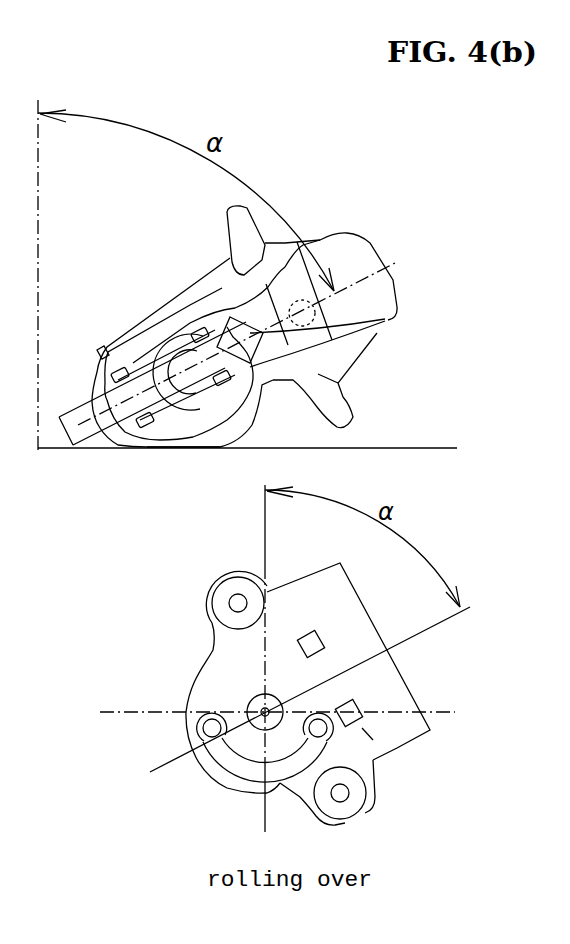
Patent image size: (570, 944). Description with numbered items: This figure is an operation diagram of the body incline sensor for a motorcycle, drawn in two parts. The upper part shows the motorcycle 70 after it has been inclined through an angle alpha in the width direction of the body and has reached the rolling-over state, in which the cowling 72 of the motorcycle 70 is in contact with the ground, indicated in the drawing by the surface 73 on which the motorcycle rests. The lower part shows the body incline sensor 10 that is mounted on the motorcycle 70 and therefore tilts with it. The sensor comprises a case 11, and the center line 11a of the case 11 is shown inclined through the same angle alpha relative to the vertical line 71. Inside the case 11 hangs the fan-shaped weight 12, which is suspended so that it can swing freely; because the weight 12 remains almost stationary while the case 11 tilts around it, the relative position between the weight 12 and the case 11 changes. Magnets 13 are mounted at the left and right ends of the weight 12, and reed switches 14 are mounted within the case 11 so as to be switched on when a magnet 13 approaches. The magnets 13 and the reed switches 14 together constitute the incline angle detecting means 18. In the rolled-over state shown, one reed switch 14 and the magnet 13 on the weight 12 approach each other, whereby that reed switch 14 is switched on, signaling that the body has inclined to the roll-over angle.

The body incline sensor 10 is at (385, 319).
The case 11 is at (360, 593).
The center line 11a is at (443, 620).
The fan-shaped weight 12 is at (223, 768).
The magnet 13 is at (373, 758).
The reed switch 14 is at (365, 728).
The incline angle detecting means 18 is at (405, 729).
The motorcycle 70 is at (171, 273).
The vertical line 71 is at (267, 538).
The cowling 72 is at (255, 435).
The ground surface 73 is at (433, 447).